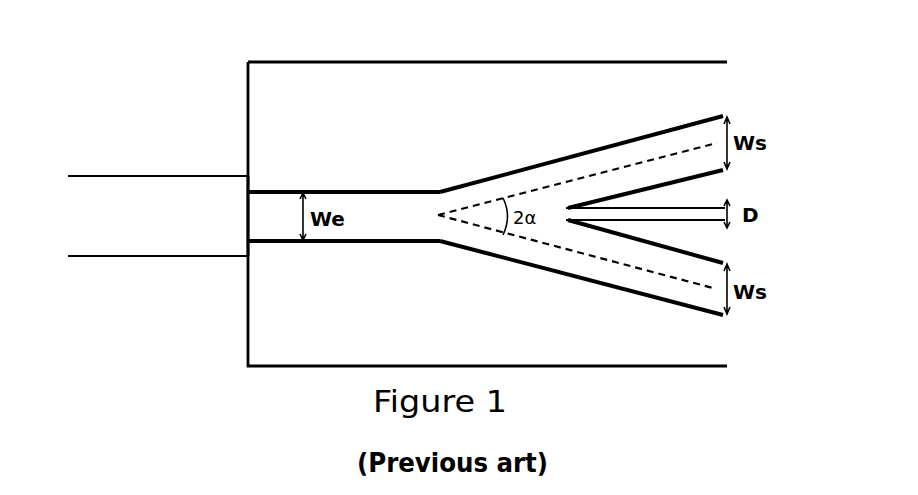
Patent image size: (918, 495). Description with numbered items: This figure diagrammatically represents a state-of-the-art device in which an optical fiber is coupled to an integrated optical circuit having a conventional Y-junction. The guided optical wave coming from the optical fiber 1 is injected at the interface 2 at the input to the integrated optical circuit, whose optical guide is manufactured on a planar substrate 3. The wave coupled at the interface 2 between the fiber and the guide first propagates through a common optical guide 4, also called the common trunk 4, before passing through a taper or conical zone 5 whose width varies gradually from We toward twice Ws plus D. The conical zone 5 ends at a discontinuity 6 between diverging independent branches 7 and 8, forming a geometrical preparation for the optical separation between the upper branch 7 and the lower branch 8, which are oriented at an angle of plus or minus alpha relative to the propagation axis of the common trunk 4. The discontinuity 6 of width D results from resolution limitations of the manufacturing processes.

The optical fiber 1 is at (132, 206).
The interface 2 is at (248, 217).
The planar substrate 3 is at (313, 128).
The common optical guide 4 is at (377, 223).
The conical zone 5 is at (508, 247).
The discontinuity 6 is at (538, 190).
The upper branch 7 is at (583, 175).
The lower branch 8 is at (586, 255).